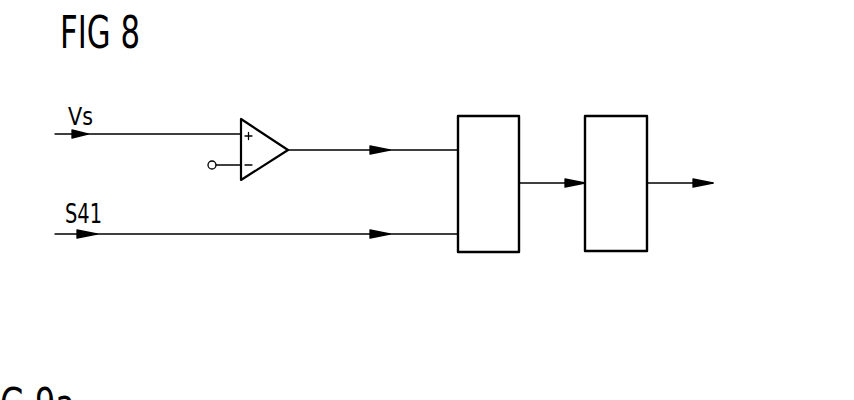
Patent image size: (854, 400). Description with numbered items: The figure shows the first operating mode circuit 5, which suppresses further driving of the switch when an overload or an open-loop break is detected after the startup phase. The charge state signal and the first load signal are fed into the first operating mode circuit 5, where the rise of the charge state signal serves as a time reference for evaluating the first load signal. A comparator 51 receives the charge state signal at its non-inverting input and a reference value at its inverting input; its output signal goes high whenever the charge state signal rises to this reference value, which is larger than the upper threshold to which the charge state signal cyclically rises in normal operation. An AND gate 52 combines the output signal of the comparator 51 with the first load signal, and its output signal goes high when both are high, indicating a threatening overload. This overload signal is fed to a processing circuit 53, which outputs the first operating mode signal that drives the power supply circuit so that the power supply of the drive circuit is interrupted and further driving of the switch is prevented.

The first operating mode circuit 5 is at (680, 73).
The comparator 51 is at (265, 130).
The AND gate 52 is at (488, 115).
The processing circuit 53 is at (616, 115).